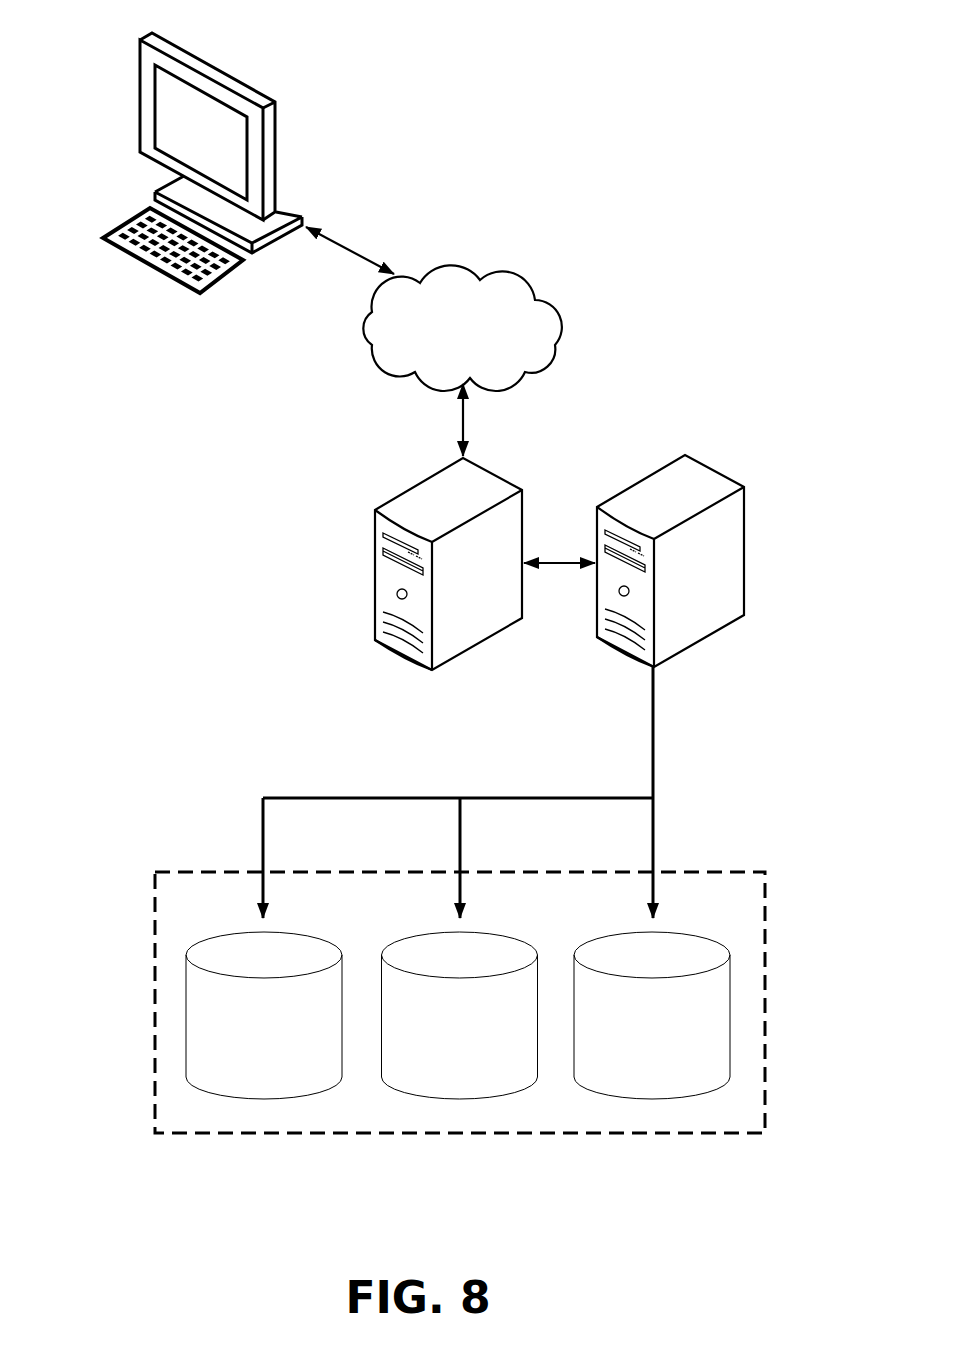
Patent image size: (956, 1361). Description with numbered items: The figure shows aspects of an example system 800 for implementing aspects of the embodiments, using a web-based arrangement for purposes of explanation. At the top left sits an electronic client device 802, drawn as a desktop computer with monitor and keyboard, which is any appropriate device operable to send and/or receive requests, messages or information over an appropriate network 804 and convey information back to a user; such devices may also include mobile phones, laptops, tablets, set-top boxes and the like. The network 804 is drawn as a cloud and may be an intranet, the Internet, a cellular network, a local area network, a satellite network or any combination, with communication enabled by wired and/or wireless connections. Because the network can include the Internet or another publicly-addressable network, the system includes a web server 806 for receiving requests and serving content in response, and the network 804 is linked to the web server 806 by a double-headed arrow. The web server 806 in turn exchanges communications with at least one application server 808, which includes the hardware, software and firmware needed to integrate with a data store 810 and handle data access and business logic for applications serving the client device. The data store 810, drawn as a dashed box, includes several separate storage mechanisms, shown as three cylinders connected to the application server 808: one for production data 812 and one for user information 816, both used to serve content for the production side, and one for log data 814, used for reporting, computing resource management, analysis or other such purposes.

The system 800 is at (707, 308).
The electronic client device 802 is at (222, 70).
The network 804 is at (500, 272).
The web server 806 is at (375, 562).
The application server 808 is at (621, 654).
The data store 810 is at (190, 1135).
The production data 812 is at (263, 1098).
The log data 814 is at (458, 1097).
The user information 816 is at (653, 1097).